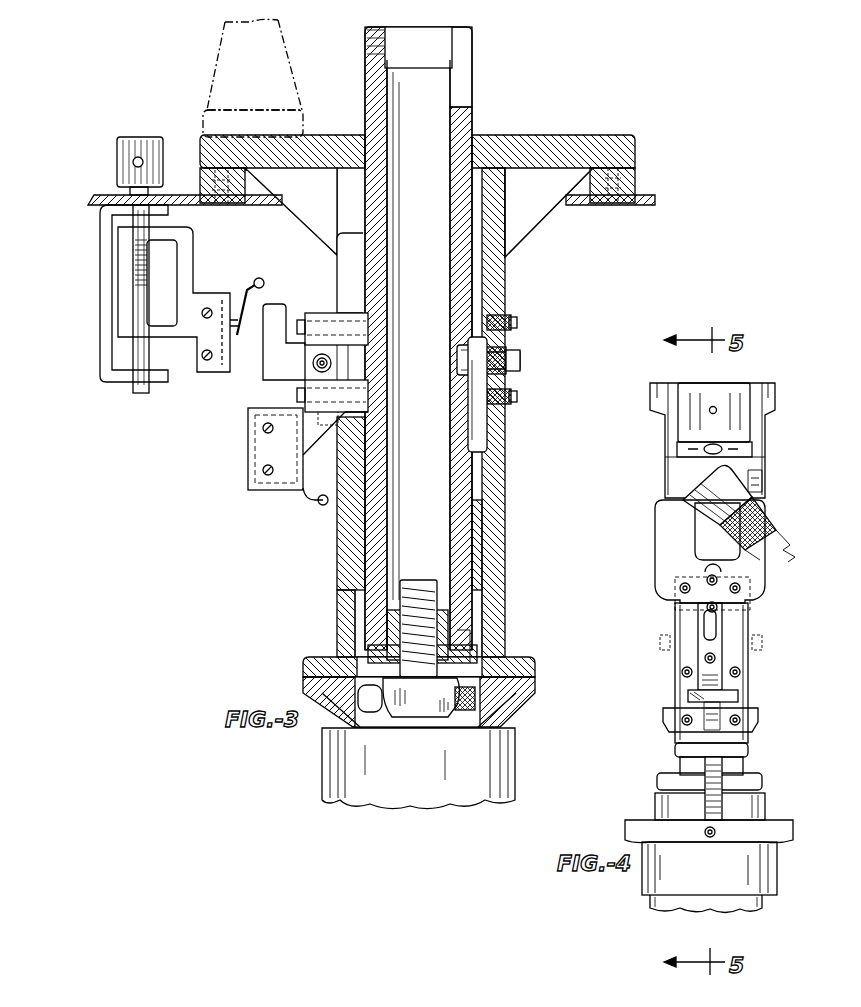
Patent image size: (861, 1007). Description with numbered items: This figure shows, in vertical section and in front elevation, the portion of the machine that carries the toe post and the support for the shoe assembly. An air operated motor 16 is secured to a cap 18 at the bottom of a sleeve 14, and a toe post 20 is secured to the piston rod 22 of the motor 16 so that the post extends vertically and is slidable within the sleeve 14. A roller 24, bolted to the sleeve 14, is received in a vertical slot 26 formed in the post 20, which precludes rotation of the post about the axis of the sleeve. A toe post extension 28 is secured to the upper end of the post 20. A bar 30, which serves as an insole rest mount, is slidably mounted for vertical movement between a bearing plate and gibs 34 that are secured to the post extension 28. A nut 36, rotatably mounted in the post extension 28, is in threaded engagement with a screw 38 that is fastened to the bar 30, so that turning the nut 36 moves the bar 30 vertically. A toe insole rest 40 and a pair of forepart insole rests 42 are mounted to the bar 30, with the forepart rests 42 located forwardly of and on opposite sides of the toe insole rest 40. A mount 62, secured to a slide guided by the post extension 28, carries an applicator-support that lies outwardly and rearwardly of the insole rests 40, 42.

In FIG. 3, the sleeve 14 is at (495, 462).
In FIG. 3, the air operated motor 16 is at (500, 761).
In FIG. 3, the cap 18 is at (500, 700).
In FIG. 3, the toe post 20 is at (462, 268).
In FIG. 4, the toe post 20 is at (760, 908).
In FIG. 3, the piston rod 22 is at (410, 584).
In FIG. 3, the roller 24 is at (456, 362).
In FIG. 3, the vertical slot 26 is at (457, 426).
In FIG. 4, the toe post extension 28 is at (760, 806).
In FIG. 4, the bar 30 is at (722, 640).
In FIG. 4, the gibs 34 is at (688, 648).
In FIG. 4, the nut 36 is at (688, 696).
In FIG. 4, the screw 38 is at (740, 687).
In FIG. 4, the toe insole rest 40 is at (714, 385).
In FIG. 4, the forepart insole rests 42 is at (766, 385).
In FIG. 4, the mount 62 is at (752, 572).